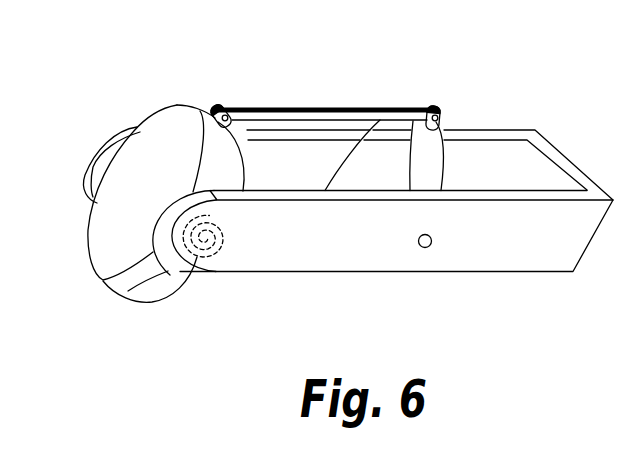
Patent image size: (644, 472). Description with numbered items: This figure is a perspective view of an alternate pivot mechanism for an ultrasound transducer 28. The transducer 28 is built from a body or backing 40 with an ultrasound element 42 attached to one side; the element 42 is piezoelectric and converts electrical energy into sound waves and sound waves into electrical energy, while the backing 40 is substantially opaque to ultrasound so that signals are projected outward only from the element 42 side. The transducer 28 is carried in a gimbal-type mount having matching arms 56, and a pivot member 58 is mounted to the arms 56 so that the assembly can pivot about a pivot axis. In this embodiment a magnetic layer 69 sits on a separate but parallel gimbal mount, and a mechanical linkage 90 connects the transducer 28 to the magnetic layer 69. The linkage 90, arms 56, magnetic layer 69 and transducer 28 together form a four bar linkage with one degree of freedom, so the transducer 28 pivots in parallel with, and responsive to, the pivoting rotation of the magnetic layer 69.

The transducer 28 is at (154, 105).
The ultrasound element 42 is at (132, 182).
The pivot member 58 is at (203, 102).
The arms 56 is at (282, 158).
The mechanical linkage 90 is at (346, 108).
The magnetic layer 69 is at (443, 152).
The backing 40 is at (171, 284).